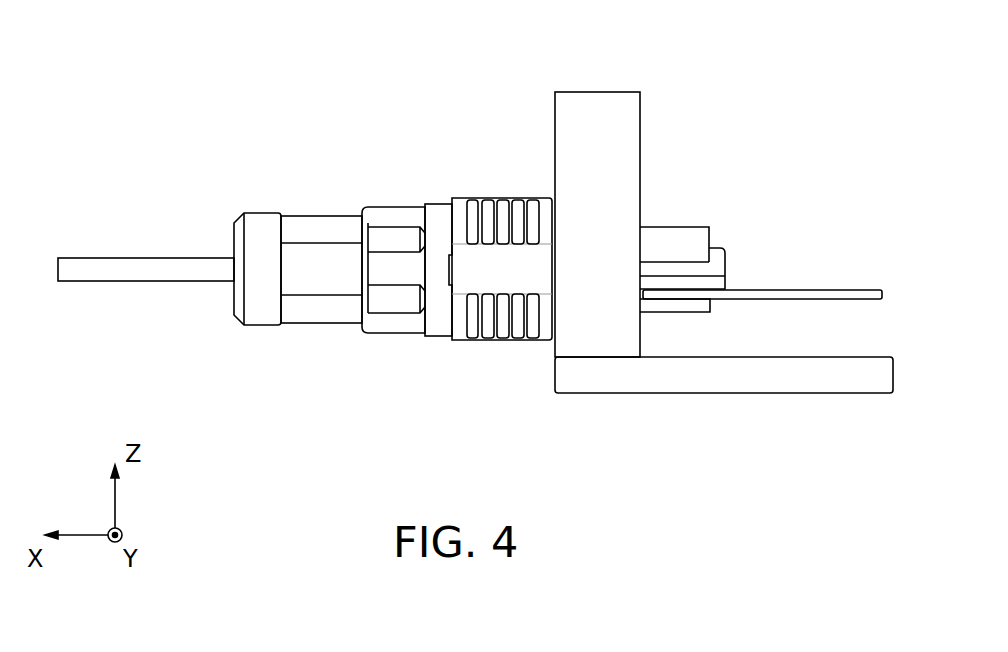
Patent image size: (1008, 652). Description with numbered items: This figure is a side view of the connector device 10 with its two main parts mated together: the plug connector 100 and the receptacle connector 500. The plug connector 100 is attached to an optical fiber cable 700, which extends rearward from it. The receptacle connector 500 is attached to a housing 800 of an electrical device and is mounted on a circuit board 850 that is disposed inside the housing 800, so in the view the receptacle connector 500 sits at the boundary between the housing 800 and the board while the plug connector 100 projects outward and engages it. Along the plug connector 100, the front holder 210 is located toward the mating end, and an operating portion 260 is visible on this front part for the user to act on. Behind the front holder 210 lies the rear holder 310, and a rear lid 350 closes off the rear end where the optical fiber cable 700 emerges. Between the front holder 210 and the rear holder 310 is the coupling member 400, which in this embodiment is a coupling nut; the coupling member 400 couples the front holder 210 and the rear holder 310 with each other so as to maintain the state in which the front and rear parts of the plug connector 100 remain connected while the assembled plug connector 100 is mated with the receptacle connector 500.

The connector device 10 is at (520, 26).
The plug connector 100 is at (411, 199).
The front holder 210 is at (668, 228).
The operating portion 260 is at (492, 328).
The rear holder 310 is at (319, 277).
The rear lid 350 is at (263, 228).
The coupling member 400 is at (397, 323).
The receptacle connector 500 is at (732, 238).
The optical fiber cable 700 is at (128, 267).
The housing 800 is at (638, 95).
The circuit board 850 is at (819, 298).